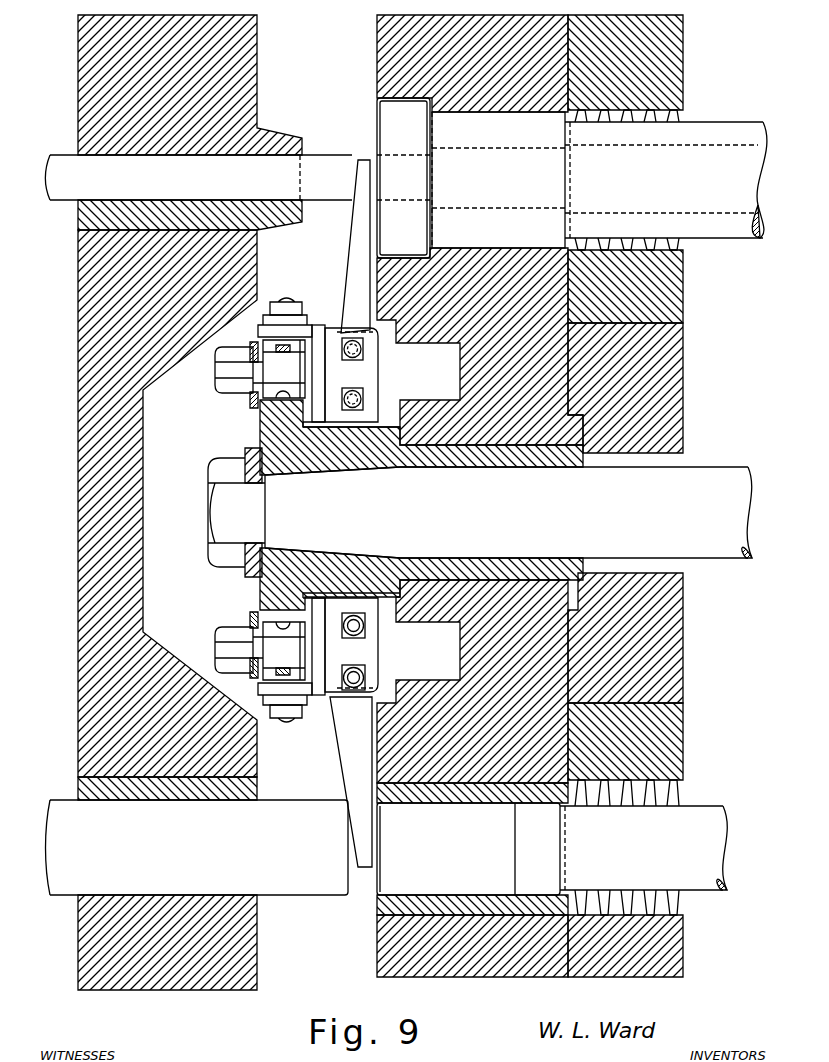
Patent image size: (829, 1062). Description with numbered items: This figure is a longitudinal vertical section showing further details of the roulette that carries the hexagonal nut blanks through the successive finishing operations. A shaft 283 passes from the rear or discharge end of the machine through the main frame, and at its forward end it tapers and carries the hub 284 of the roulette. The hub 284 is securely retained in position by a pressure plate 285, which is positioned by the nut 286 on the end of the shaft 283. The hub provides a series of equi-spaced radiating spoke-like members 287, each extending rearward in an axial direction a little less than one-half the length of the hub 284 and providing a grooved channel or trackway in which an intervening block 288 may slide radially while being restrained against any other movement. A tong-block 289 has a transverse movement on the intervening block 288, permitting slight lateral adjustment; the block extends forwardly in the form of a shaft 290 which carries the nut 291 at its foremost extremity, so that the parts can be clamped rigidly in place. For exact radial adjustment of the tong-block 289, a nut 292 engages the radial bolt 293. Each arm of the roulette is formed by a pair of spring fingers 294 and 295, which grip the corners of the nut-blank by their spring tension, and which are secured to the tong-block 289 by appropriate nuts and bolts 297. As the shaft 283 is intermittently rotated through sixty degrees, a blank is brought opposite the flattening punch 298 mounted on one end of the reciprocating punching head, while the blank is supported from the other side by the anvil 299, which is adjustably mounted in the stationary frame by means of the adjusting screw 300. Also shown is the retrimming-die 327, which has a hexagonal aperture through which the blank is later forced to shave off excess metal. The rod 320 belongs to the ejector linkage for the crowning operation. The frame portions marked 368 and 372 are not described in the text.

The shaft 283 is at (498, 512).
The hub 284 is at (421, 505).
The pressure plate 285 is at (245, 573).
The nut 286 is at (218, 468).
The radiating spoke-like members 287 is at (257, 407).
The intervening block 288 is at (320, 325).
The tong-block 289 is at (330, 380).
The shaft 290 is at (295, 646).
The nut 291 is at (223, 388).
The nut 292 is at (283, 310).
The radial bolt 293 is at (305, 292).
The spring finger 294 is at (353, 770).
The spring finger 295 is at (353, 244).
The nuts and bolts 297 is at (363, 392).
The flattening punch 298 is at (197, 847).
The anvil 299 is at (468, 849).
The adjusting screw 300 is at (663, 795).
The rod 320 is at (199, 177).
The retrimming-die 327 is at (403, 178).
The frame 368 is at (138, 486).
The bushing 372 is at (157, 792).